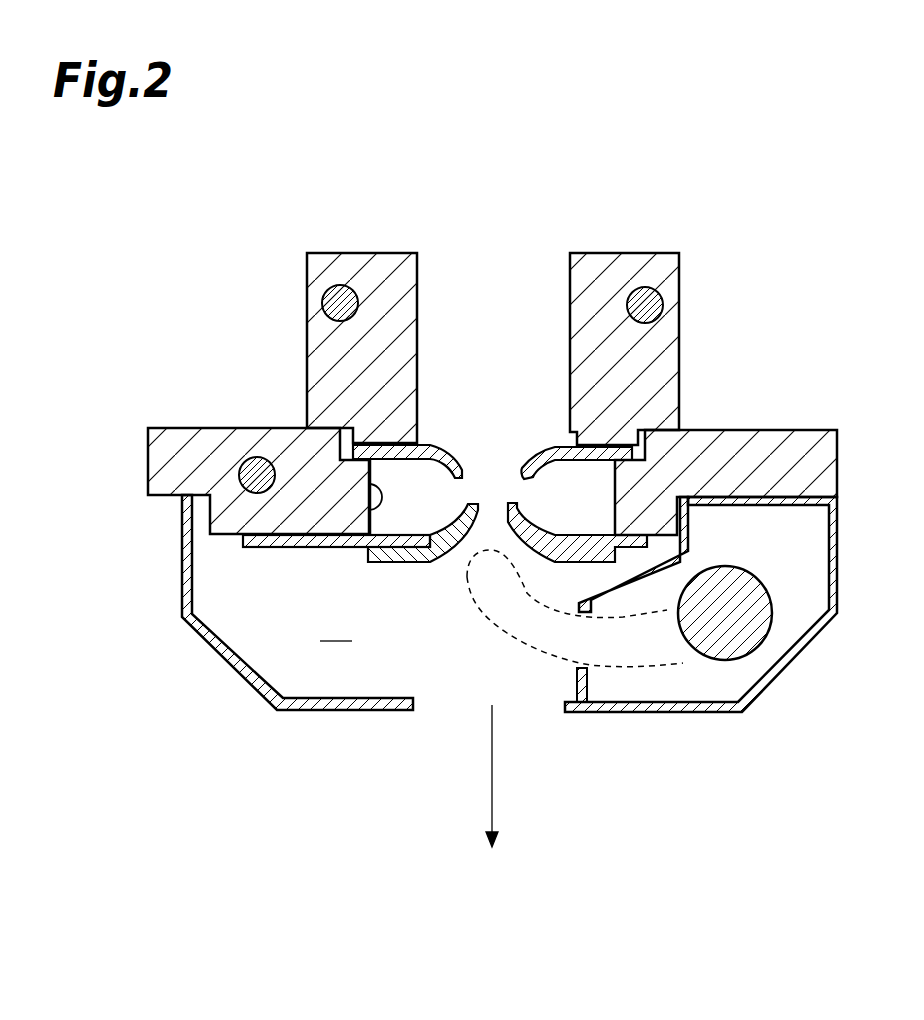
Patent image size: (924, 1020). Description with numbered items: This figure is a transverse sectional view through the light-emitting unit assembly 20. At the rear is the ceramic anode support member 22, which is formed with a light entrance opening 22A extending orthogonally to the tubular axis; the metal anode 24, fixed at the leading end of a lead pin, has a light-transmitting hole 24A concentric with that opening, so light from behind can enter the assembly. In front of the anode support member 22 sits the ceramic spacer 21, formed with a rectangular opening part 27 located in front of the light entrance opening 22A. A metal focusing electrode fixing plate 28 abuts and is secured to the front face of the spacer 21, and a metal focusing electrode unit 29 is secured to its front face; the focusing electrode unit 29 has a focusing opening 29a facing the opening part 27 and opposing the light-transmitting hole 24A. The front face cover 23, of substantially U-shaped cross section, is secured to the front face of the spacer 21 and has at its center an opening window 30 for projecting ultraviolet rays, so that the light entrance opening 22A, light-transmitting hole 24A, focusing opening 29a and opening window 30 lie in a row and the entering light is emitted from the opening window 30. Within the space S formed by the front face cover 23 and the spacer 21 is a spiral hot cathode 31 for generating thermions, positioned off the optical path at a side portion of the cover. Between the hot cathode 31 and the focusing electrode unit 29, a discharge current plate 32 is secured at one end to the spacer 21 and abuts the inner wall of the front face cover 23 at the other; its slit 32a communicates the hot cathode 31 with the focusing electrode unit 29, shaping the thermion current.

The light-emitting unit assembly 20 is at (759, 182).
The spacer 21 is at (797, 442).
The anode support member 22 is at (667, 330).
The light entrance opening 22A is at (493, 278).
The front face cover 23 is at (800, 657).
The anode 24 is at (549, 447).
The light-transmitting hole 24A is at (492, 457).
The opening part 27 is at (372, 487).
The focusing electrode fixing plate 28 is at (255, 547).
The focusing electrode unit 29 is at (407, 557).
The focusing opening 29a is at (492, 528).
The opening window 30 is at (447, 705).
The hot cathode 31 is at (722, 650).
The discharge current plate 32 is at (687, 565).
The slit 32a is at (585, 640).
The space S is at (336, 627).